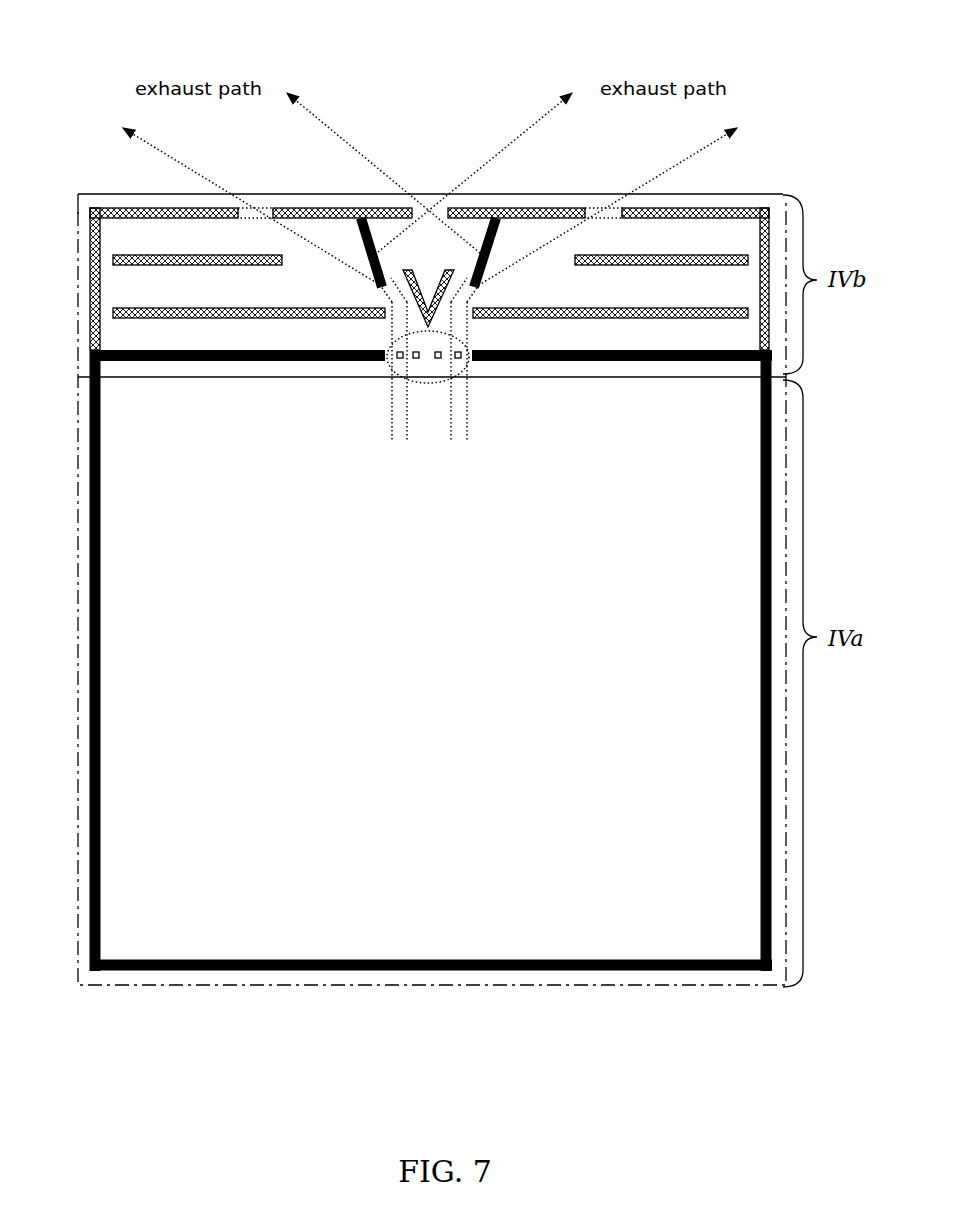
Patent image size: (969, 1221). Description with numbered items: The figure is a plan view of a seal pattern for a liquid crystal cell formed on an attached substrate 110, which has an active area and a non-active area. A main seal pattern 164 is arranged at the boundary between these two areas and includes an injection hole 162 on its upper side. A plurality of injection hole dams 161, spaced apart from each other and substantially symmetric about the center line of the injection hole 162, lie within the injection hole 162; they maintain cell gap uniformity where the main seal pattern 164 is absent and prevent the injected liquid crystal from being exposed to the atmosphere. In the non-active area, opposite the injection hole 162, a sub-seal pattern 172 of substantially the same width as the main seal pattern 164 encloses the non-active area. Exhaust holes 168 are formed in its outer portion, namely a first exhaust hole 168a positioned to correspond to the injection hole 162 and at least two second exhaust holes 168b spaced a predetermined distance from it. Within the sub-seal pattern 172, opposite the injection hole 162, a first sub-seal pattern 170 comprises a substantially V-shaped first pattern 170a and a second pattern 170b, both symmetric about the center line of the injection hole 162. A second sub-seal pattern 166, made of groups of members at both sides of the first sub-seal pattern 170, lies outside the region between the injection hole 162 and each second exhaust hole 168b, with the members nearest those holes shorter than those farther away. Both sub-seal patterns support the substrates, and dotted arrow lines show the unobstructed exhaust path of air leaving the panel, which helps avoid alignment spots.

The attached substrate 110 is at (753, 194).
The injection hole dams 161 is at (460, 358).
The injection hole 162 is at (428, 384).
The main seal pattern 164 is at (193, 971).
The second sub-seal pattern 166 is at (172, 265).
The exhaust holes 168 is at (245, 133).
The first exhaust hole 168a is at (428, 207).
The second exhaust holes 168b is at (258, 207).
The first sub-seal pattern 170 is at (578, 272).
The first pattern 170a is at (455, 302).
The second pattern 170b is at (372, 238).
The sub-seal pattern 172 is at (90, 210).